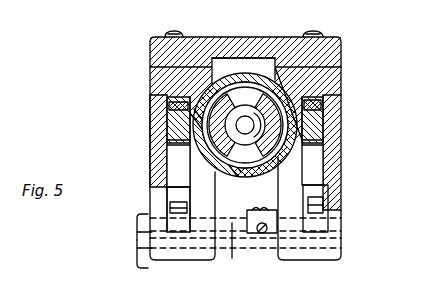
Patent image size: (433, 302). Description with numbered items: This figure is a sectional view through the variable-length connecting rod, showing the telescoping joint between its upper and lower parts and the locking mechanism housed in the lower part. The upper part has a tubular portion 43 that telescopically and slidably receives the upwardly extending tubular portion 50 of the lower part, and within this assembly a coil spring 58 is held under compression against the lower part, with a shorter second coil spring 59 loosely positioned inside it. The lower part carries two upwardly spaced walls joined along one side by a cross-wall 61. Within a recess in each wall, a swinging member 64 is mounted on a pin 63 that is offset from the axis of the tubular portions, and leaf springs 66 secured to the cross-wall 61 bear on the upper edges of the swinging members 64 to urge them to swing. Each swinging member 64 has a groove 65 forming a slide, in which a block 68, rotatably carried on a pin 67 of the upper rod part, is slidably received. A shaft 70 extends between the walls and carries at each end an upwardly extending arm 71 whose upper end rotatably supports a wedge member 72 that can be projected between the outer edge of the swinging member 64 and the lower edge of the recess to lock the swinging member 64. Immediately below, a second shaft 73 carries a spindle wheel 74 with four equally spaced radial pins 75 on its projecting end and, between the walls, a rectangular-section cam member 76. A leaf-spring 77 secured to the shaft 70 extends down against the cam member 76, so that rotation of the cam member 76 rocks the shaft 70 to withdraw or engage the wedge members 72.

The cross-wall 61 is at (235, 38).
The leaf springs 66 is at (322, 35).
The pins 63 is at (152, 69).
The blocks 68 is at (165, 105).
The pins 67 is at (168, 118).
The groove 65 is at (175, 152).
The swinging member 64 is at (163, 163).
The coil spring 58 is at (237, 96).
The second coil spring 59 is at (262, 148).
The tubular portion 43 is at (245, 177).
The tubular portion 50 is at (255, 170).
The leaf-spring 77 is at (267, 215).
The wedge member 72 is at (172, 193).
The arm 71 is at (175, 212).
The spindle wheel 74 is at (148, 232).
The radial pins 75 is at (140, 260).
The second shaft 73 is at (182, 248).
The shaft 70 is at (229, 251).
The cam member 76 is at (258, 253).